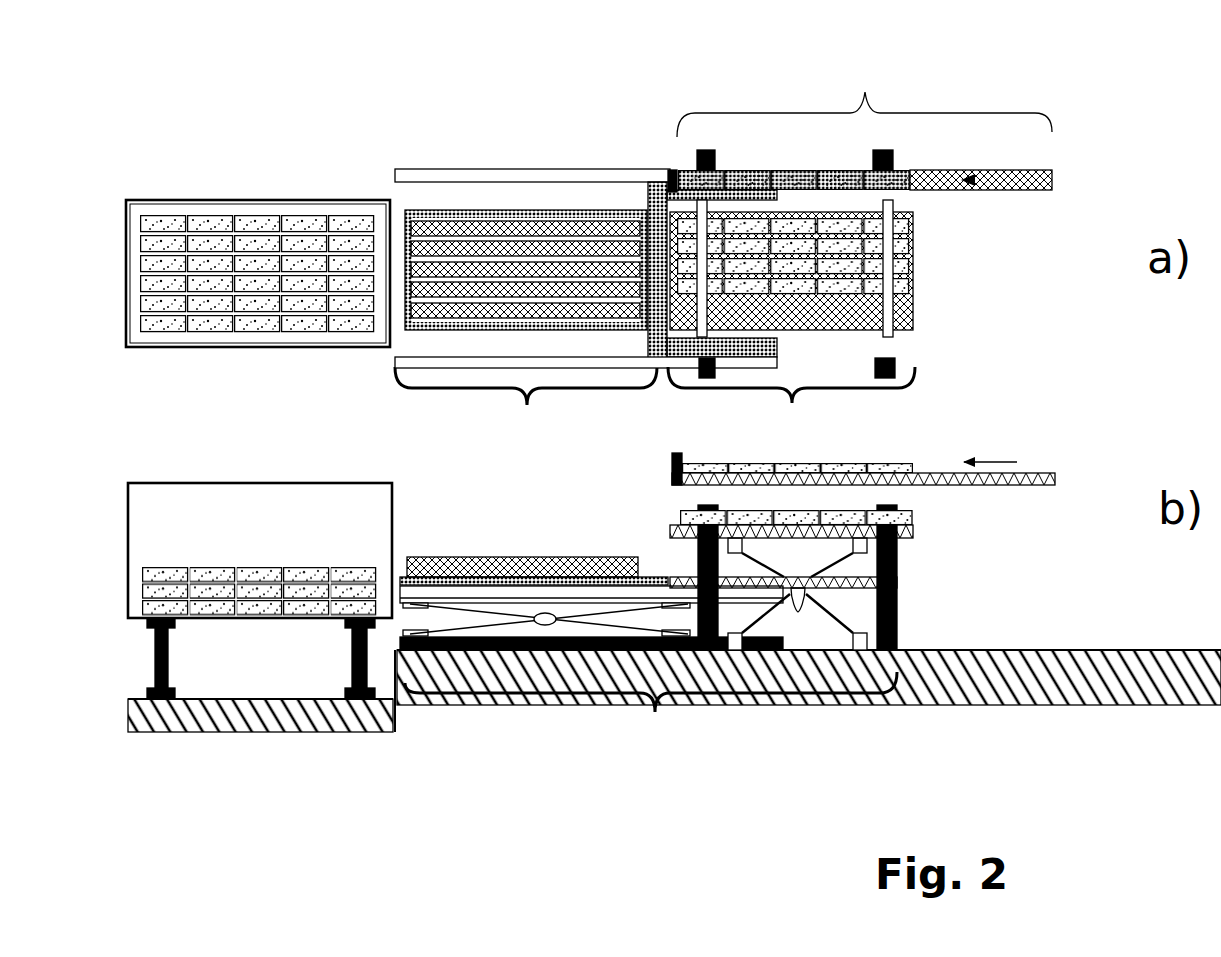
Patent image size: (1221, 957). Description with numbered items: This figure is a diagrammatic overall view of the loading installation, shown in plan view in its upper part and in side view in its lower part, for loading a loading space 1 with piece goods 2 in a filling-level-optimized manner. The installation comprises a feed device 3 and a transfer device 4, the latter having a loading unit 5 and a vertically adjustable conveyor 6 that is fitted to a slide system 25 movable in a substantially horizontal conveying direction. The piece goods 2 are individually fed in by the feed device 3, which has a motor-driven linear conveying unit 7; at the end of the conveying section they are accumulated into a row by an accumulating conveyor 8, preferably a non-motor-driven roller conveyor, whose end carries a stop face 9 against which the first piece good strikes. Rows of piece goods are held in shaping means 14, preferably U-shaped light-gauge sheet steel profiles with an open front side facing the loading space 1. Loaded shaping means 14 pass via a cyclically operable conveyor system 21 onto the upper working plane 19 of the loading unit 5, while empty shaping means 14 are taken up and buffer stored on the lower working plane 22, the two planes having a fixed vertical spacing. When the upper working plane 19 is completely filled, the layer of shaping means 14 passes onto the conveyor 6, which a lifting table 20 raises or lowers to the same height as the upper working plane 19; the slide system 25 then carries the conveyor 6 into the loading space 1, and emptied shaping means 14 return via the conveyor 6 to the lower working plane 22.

The loading space 1 is at (240, 202).
The piece goods 2 is at (315, 222).
The feed device 3 is at (864, 91).
The transfer device 4 is at (651, 641).
The loading unit 5 is at (791, 318).
The vertically adjustable conveyor 6 is at (526, 323).
The motor-driven linear conveying unit 7 is at (1005, 188).
The accumulating conveyor 8 is at (790, 182).
The stop face 9 is at (668, 166).
The shaping means 14 is at (516, 280).
The upper working plane 19 is at (918, 537).
The lifting table 20 is at (520, 620).
The cyclically operable conveyor system 21 is at (899, 317).
The lower working plane 22 is at (901, 584).
The slide system 25 is at (660, 394).